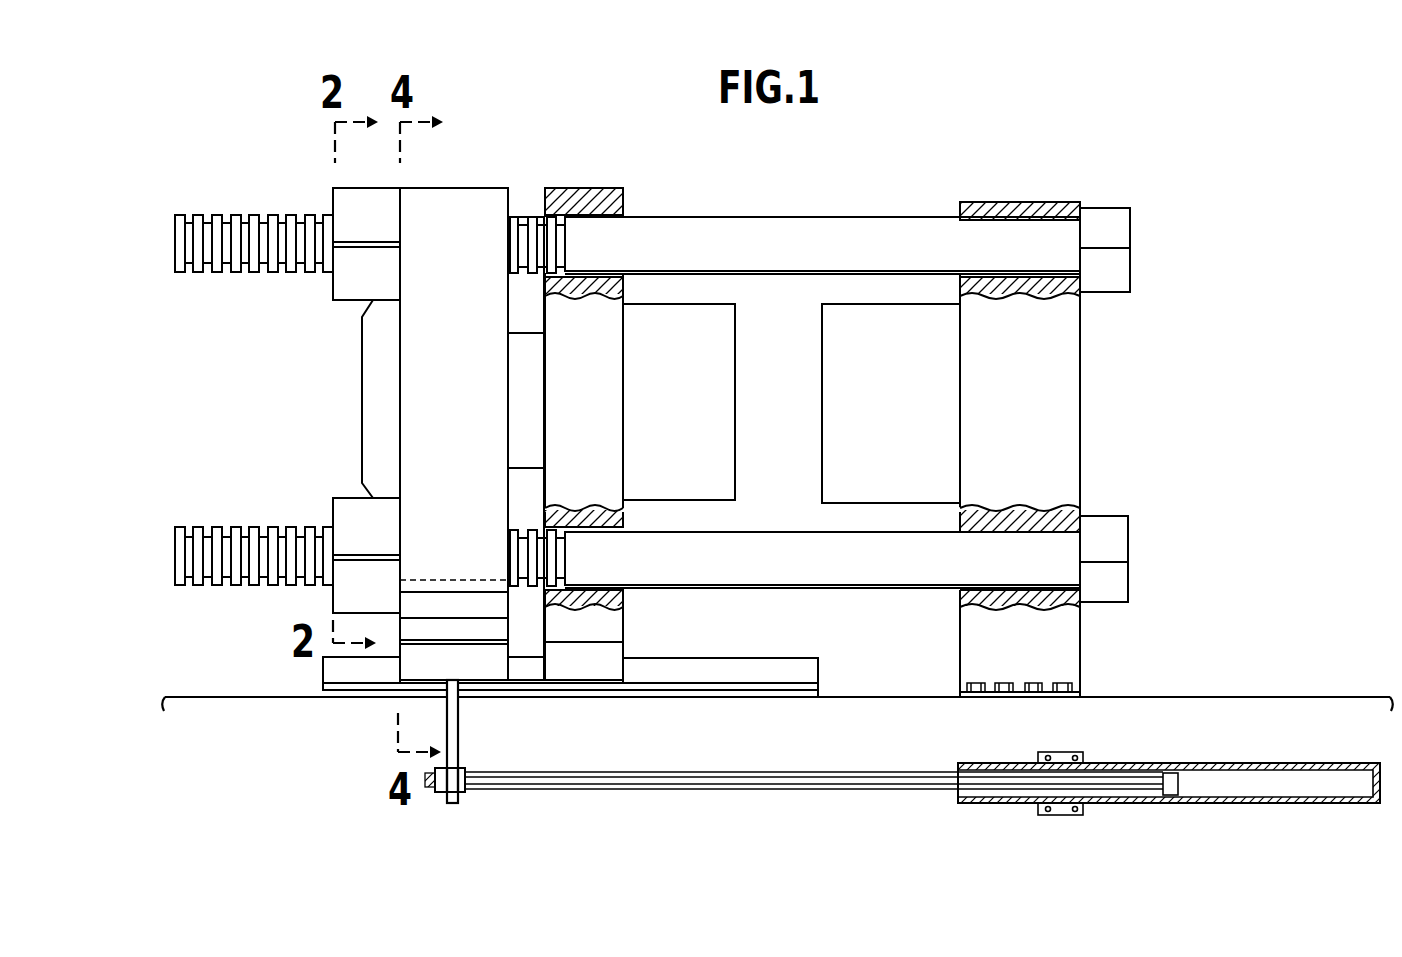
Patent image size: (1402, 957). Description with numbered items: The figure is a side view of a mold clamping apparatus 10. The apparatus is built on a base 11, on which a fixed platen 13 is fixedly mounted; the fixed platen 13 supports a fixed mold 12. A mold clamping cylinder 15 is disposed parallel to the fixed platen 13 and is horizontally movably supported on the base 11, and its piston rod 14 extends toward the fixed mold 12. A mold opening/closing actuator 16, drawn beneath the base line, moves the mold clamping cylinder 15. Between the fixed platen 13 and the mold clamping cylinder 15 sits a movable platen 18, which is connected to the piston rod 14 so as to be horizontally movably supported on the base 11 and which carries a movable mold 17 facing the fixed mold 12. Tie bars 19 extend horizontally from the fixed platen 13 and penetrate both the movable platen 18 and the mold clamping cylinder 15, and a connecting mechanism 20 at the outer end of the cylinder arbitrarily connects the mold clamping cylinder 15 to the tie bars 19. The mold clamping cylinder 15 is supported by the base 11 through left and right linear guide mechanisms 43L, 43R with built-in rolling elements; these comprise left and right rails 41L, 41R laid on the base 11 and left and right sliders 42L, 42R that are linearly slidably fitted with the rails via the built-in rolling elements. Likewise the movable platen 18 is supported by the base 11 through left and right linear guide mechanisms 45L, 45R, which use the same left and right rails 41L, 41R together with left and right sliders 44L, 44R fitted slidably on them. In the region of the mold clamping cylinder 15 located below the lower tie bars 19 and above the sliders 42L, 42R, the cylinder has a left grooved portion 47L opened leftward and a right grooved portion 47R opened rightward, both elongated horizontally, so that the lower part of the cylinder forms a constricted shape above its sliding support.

The mold clamping apparatus 10 is at (1179, 182).
The base 11 is at (1252, 712).
The fixed mold 12 is at (878, 318).
The fixed platen 13 is at (1003, 208).
The piston rod 14 is at (518, 352).
The mold clamping cylinder 15 is at (443, 218).
The mold opening/closing actuator 16 is at (1252, 808).
The movable mold 17 is at (668, 317).
The movable platen 18 is at (579, 204).
The tie bars 19 is at (770, 233).
The connecting mechanism 20 is at (319, 170).
The left rail 41L is at (760, 645).
The right rail 41R is at (800, 668).
The left slider 42L is at (380, 703).
The right slider 42R is at (407, 670).
The left linear guide mechanism 43L is at (794, 741).
The right linear guide mechanism 43R is at (485, 706).
The left slider 44L is at (648, 644).
The right slider 44R is at (615, 652).
The left linear guide mechanism 45L is at (570, 724).
The right linear guide mechanism 45R is at (615, 707).
The left grooved portion 47L is at (338, 615).
The right grooved portion 47R is at (407, 602).